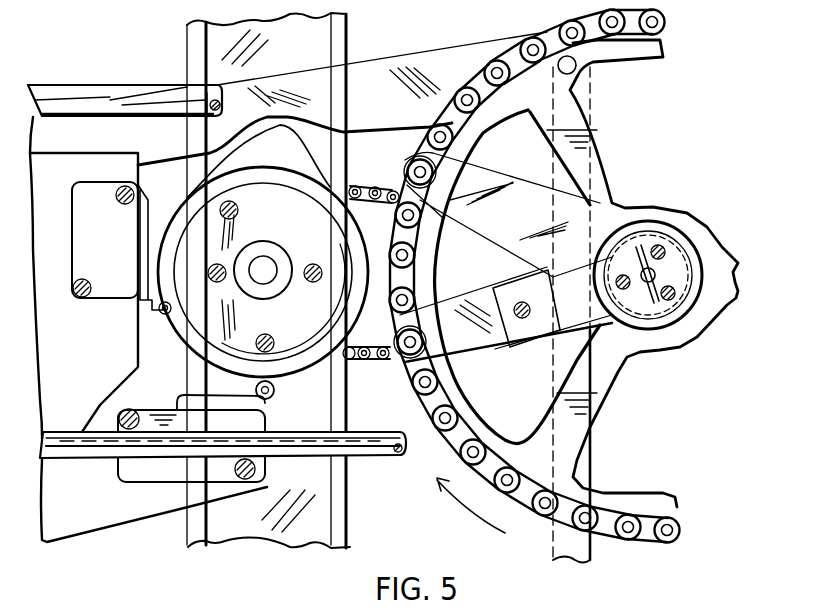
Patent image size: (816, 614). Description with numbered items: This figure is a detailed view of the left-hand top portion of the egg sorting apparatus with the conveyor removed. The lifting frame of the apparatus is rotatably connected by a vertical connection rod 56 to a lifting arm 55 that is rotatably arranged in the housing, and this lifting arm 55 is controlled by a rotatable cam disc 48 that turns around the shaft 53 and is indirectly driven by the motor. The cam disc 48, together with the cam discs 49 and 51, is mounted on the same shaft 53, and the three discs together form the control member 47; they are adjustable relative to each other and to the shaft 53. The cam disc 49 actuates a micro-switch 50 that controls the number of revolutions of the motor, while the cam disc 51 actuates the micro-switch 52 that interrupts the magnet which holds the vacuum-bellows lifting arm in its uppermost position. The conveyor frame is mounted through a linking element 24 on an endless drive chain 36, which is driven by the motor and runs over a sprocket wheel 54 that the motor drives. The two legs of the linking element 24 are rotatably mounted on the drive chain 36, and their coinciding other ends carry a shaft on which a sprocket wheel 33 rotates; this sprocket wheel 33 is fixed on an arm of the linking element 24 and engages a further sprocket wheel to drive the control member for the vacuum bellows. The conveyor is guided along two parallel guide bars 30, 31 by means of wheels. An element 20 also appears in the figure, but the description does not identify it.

The mounting plate 20 is at (533, 330).
The linking element 24 is at (585, 205).
The guide bar 30 is at (93, 97).
The guide bar 31 is at (88, 445).
The sprocket wheel 33 is at (672, 205).
The endless chain 36 is at (632, 534).
The control member 47 is at (160, 336).
The cam disc 48 is at (275, 152).
The cam disc 49 is at (312, 365).
The micro-switch 50 is at (163, 420).
The cam disc 51 is at (185, 215).
The micro-switch 52 is at (107, 268).
The shaft 53 is at (265, 262).
The sprocket wheel 54 is at (483, 428).
The lifting arm 55 is at (472, 57).
The vertical connection rod 56 is at (567, 545).